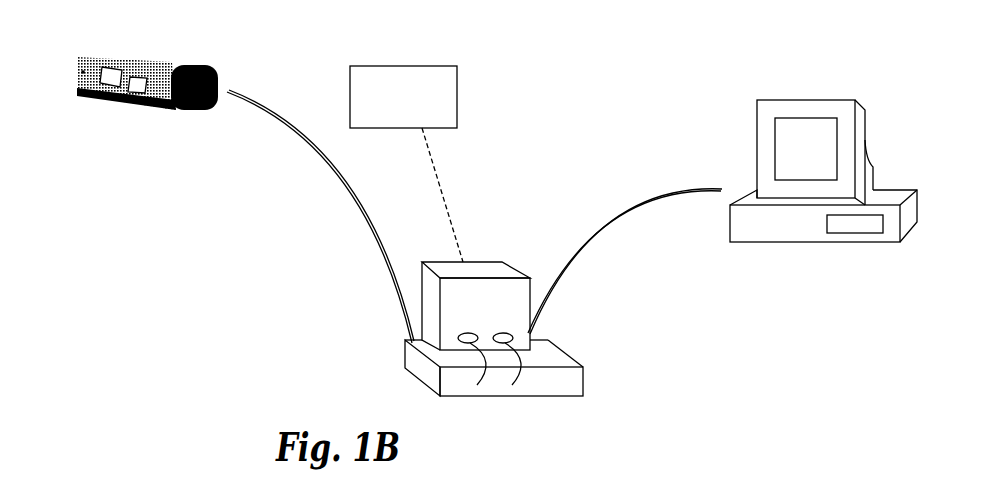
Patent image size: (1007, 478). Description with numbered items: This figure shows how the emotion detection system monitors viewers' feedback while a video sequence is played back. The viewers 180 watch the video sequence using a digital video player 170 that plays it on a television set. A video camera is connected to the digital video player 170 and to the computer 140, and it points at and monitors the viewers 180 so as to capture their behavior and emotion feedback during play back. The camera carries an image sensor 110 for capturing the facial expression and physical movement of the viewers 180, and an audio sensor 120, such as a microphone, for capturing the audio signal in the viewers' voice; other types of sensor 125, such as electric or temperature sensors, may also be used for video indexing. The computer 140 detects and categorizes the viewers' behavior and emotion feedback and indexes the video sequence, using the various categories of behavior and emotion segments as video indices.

The image sensor 110 is at (212, 70).
The audio sensor 120 is at (137, 83).
The sensor 125 is at (112, 77).
The computer 140 is at (835, 100).
The digital video player 170 is at (538, 396).
The viewers 180 is at (402, 65).